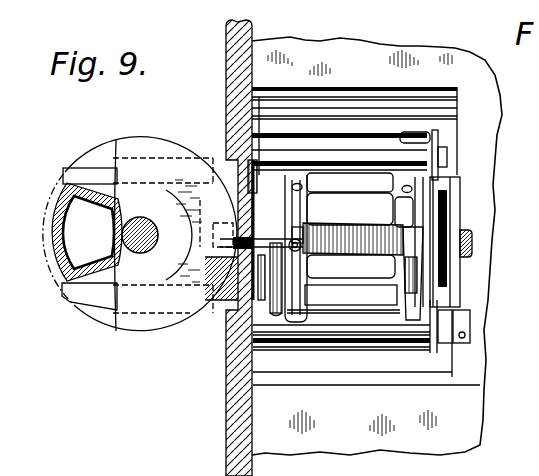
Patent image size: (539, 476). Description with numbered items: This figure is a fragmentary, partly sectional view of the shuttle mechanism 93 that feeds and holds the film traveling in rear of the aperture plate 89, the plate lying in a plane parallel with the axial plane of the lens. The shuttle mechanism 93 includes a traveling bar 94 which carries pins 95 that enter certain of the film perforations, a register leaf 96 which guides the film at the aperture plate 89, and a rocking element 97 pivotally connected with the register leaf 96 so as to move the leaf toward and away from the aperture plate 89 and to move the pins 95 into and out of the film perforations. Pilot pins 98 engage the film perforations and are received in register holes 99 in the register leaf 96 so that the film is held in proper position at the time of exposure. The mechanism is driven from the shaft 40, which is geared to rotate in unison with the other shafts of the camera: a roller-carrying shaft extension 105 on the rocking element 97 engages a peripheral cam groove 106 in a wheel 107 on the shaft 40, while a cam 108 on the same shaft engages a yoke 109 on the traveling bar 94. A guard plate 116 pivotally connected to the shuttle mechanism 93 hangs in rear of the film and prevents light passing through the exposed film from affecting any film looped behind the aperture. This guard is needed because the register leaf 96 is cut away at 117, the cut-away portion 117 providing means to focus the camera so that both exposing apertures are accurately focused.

The shaft 40 is at (125, 232).
The aperture plate 89 is at (440, 367).
The shuttle mechanism 93 is at (333, 352).
The traveling bar 94 is at (333, 230).
The pins 95 is at (300, 243).
The register leaf 96 is at (305, 183).
The rocking element 97 is at (357, 330).
The pilot pins 98 is at (425, 178).
The register holes 99 is at (405, 186).
The roller-carrying shaft extension 105 is at (233, 250).
The peripheral cam groove 106 is at (133, 340).
The wheel 107 is at (146, 146).
The cam 108 is at (60, 270).
The yoke 109 is at (80, 172).
The guard plate 116 is at (396, 122).
The cut-away portion 117 is at (320, 280).